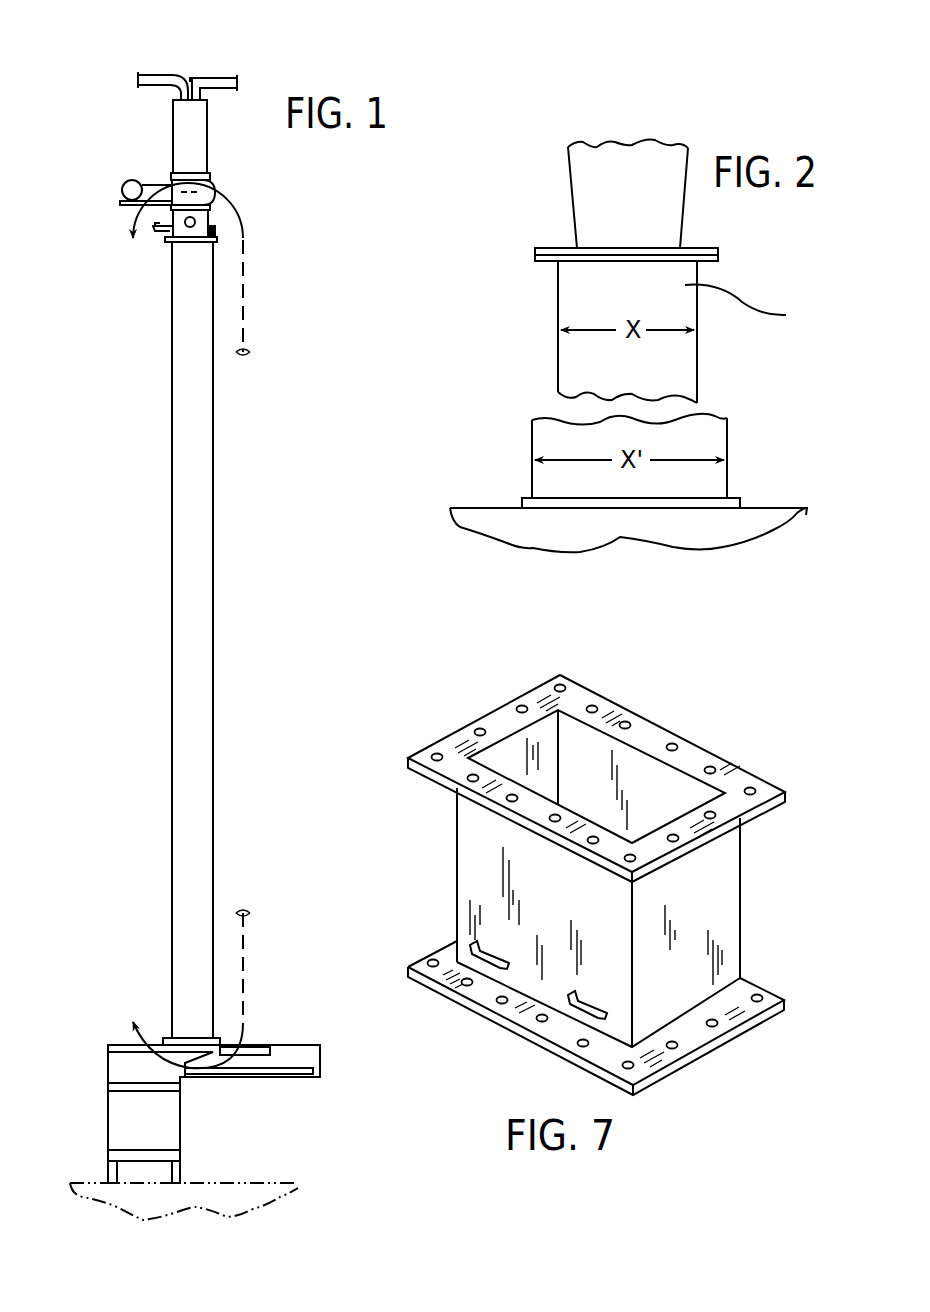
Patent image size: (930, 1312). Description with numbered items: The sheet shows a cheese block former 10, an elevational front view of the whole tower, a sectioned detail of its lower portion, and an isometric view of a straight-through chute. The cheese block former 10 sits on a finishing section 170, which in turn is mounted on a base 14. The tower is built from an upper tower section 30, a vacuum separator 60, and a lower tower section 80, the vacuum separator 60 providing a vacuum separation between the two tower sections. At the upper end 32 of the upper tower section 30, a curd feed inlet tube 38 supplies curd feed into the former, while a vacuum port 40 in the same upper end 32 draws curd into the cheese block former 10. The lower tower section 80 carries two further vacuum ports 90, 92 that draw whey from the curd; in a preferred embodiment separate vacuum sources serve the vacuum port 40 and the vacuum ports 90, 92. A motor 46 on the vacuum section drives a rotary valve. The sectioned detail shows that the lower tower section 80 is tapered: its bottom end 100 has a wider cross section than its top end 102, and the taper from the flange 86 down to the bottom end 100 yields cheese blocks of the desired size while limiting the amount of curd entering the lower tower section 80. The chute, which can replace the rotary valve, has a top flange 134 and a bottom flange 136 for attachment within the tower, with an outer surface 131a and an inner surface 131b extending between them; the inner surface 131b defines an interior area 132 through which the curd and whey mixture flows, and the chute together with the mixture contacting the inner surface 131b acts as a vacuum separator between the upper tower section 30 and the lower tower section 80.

In FIG. 1, the cheese block former 10 is at (135, 573).
In FIG. 1, the base 14 is at (100, 1195).
In FIG. 1, the upper tower section 30 is at (187, 135).
In FIG. 1, the upper end 32 is at (207, 98).
In FIG. 1, the curd feed inlet tube 38 is at (157, 74).
In FIG. 1, the vacuum port 40 is at (213, 74).
In FIG. 1, the motor 46 is at (124, 183).
In FIG. 1, the vacuum separator 60 is at (233, 192).
In FIG. 1, the lower tower section 80 is at (195, 378).
In FIG. 2, the lower tower section 80 is at (682, 378).
In FIG. 2, the flange 86 is at (718, 257).
In FIG. 1, the vacuum port 90 is at (155, 235).
In FIG. 1, the vacuum port 92 is at (212, 230).
In FIG. 2, the bottom end 100 is at (710, 500).
In FIG. 2, the top end 102 is at (754, 306).
In FIG. 7, the outer surface 131a is at (732, 958).
In FIG. 7, the inner surface 131b is at (512, 742).
In FIG. 7, the interior area 132 is at (603, 797).
In FIG. 7, the top flange 134 is at (737, 806).
In FIG. 7, the bottom flange 136 is at (695, 1033).
In FIG. 1, the finishing section 170 is at (92, 1052).